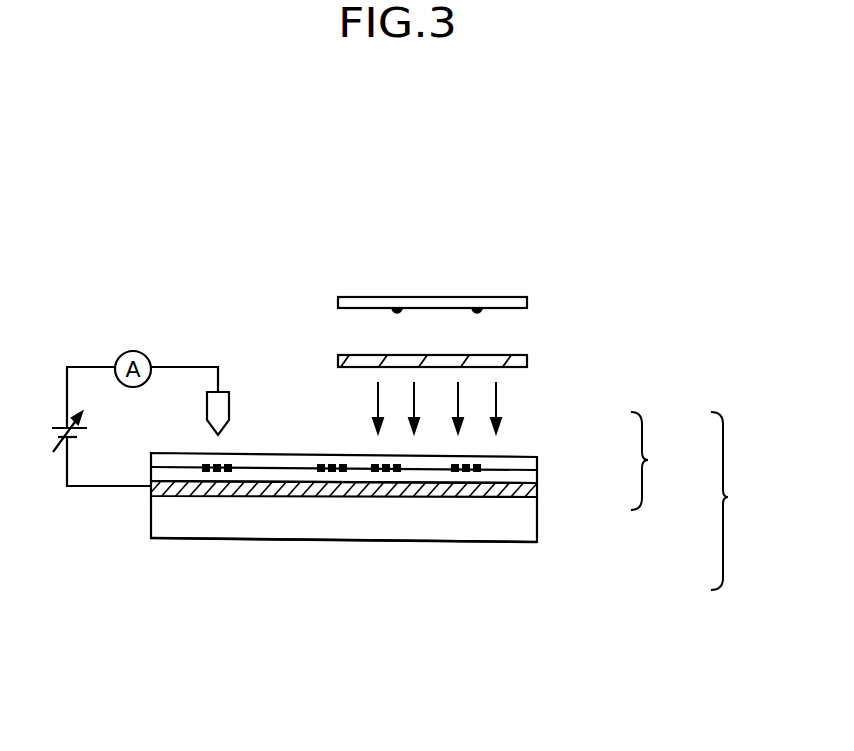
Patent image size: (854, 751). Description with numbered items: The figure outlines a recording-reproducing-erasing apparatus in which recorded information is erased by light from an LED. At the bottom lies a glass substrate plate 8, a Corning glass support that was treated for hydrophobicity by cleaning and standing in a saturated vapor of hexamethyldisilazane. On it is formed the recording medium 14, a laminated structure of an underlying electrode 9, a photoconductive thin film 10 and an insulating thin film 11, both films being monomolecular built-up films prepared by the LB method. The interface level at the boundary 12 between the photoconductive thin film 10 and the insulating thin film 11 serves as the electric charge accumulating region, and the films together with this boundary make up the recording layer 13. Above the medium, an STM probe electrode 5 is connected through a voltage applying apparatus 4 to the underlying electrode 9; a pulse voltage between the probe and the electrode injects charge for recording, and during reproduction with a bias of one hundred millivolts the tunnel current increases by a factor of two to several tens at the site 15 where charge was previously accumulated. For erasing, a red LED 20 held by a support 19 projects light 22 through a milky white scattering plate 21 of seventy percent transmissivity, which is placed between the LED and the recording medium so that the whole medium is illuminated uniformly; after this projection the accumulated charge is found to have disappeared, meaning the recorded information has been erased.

The voltage applying apparatus 4 is at (51, 436).
The STM probe electrode 5 is at (228, 408).
The glass substrate plate 8 is at (538, 540).
The underlying electrode 9 is at (538, 500).
The photoconductive thin film 10 is at (538, 485).
The insulating thin film 11 is at (528, 458).
The boundary 12 is at (538, 469).
The recording layer 13 is at (660, 461).
The recording medium 14 is at (741, 501).
The site having accumulated charge 15 is at (222, 476).
The support for LED 19 is at (520, 297).
The LED 20 is at (482, 311).
The scattering plate 21 is at (526, 357).
The projected light 22 is at (497, 403).